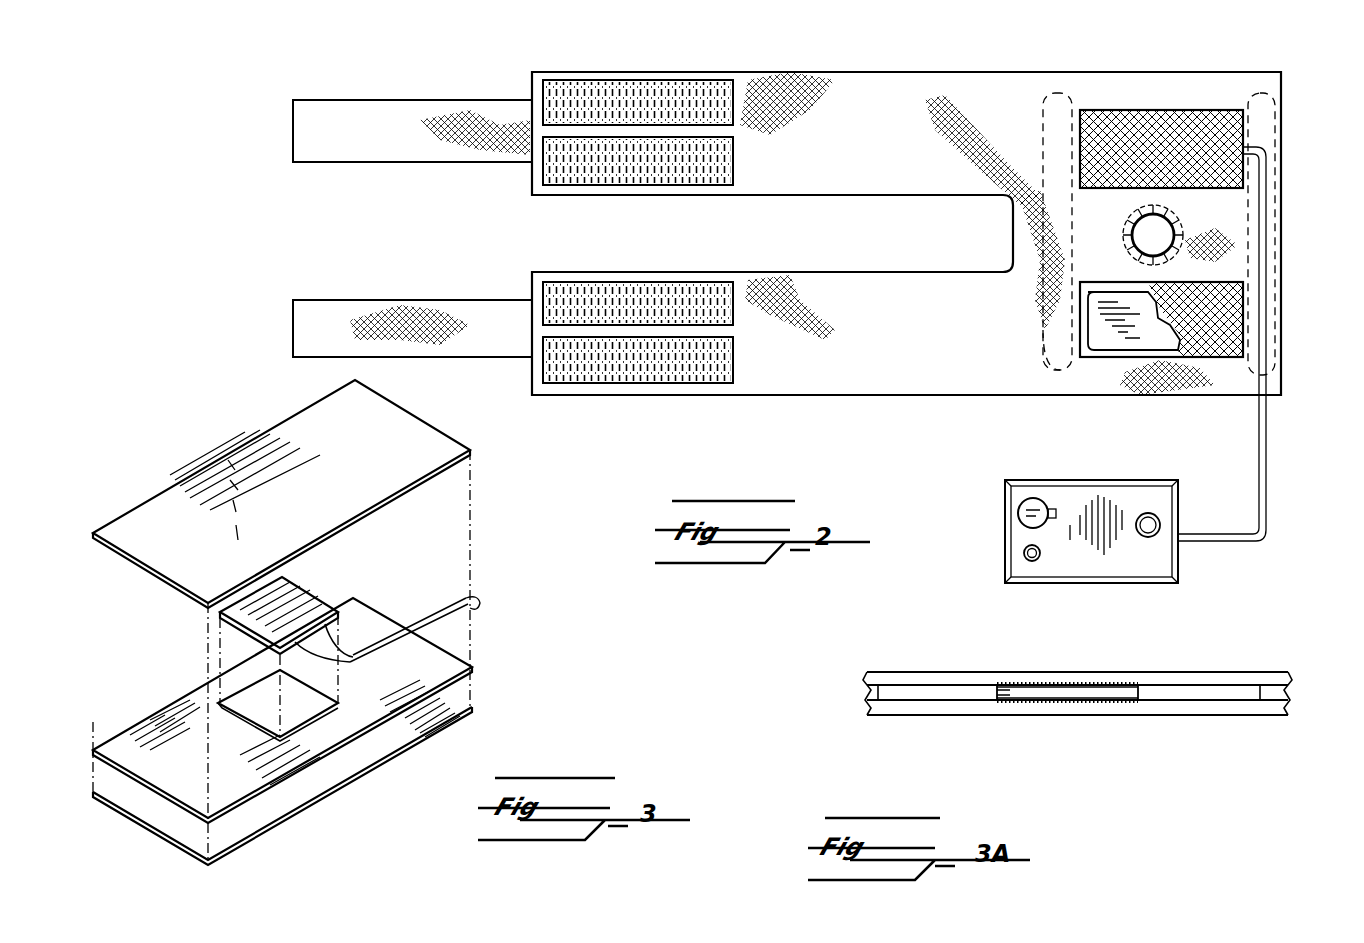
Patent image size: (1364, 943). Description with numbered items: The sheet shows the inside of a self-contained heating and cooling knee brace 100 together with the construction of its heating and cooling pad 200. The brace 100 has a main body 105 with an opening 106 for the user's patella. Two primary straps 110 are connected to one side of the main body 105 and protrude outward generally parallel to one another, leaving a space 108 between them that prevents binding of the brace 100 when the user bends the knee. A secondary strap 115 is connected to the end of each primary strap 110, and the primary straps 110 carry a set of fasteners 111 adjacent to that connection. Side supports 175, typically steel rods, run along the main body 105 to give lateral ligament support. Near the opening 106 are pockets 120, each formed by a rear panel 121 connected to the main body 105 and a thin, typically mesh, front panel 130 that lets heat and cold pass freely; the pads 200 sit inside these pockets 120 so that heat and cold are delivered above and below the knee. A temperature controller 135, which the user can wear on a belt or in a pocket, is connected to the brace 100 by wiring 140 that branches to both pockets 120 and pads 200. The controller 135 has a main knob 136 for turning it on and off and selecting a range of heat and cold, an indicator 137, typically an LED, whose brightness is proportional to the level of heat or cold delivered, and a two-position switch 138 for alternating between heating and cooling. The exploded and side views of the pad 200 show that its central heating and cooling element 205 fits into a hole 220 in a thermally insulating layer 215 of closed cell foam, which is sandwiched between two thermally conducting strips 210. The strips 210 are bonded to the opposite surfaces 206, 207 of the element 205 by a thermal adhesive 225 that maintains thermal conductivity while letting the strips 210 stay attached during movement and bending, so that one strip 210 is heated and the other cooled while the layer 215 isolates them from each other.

In FIG. 2, the self-contained heating and cooling knee brace 100 is at (752, 52).
In FIG. 2, the main body 105 is at (1175, 90).
In FIG. 2, the opening 106 is at (1158, 233).
In FIG. 2, the space 108 is at (578, 177).
In FIG. 2, the primary straps 110 is at (868, 92).
In FIG. 2, the set of fasteners 111 is at (568, 92).
In FIG. 2, the secondary straps 115 is at (385, 108).
In FIG. 2, the pockets 120 is at (1247, 118).
In FIG. 2, the rear panel 121 is at (1040, 318).
In FIG. 2, the front panel 130 is at (1140, 120).
In FIG. 2, the temperature controller 135 is at (1140, 583).
In FIG. 2, the main knob 136 is at (1028, 498).
In FIG. 2, the indicator 137 is at (1023, 553).
In FIG. 2, the two-position switch 138 is at (1148, 513).
In FIG. 2, the wiring 140 is at (1267, 455).
In FIG. 3, the wiring 140 is at (452, 613).
In FIG. 2, the side supports 175 is at (1055, 88).
In FIG. 2, the heating and cooling pad 200 is at (1097, 337).
In FIG. 3, the heating and cooling pad 200 is at (128, 838).
In FIG. 3, the heating and cooling element 205 is at (290, 600).
In FIG. 3A, the heating and cooling element 205 is at (1123, 700).
In FIG. 3A, the surface 206 is at (1007, 680).
In FIG. 3A, the surface 207 is at (1072, 707).
In FIG. 3, the strips 210 is at (195, 493).
In FIG. 3A, the strips 210 is at (1255, 673).
In FIG. 3, the thermally insulating layer 215 is at (243, 775).
In FIG. 3A, the thermally insulating layer 215 is at (1193, 693).
In FIG. 3, the hole 220 is at (300, 710).
In FIG. 3A, the hole 220 is at (1105, 690).
In FIG. 3A, the thermal adhesive 225 is at (1025, 690).